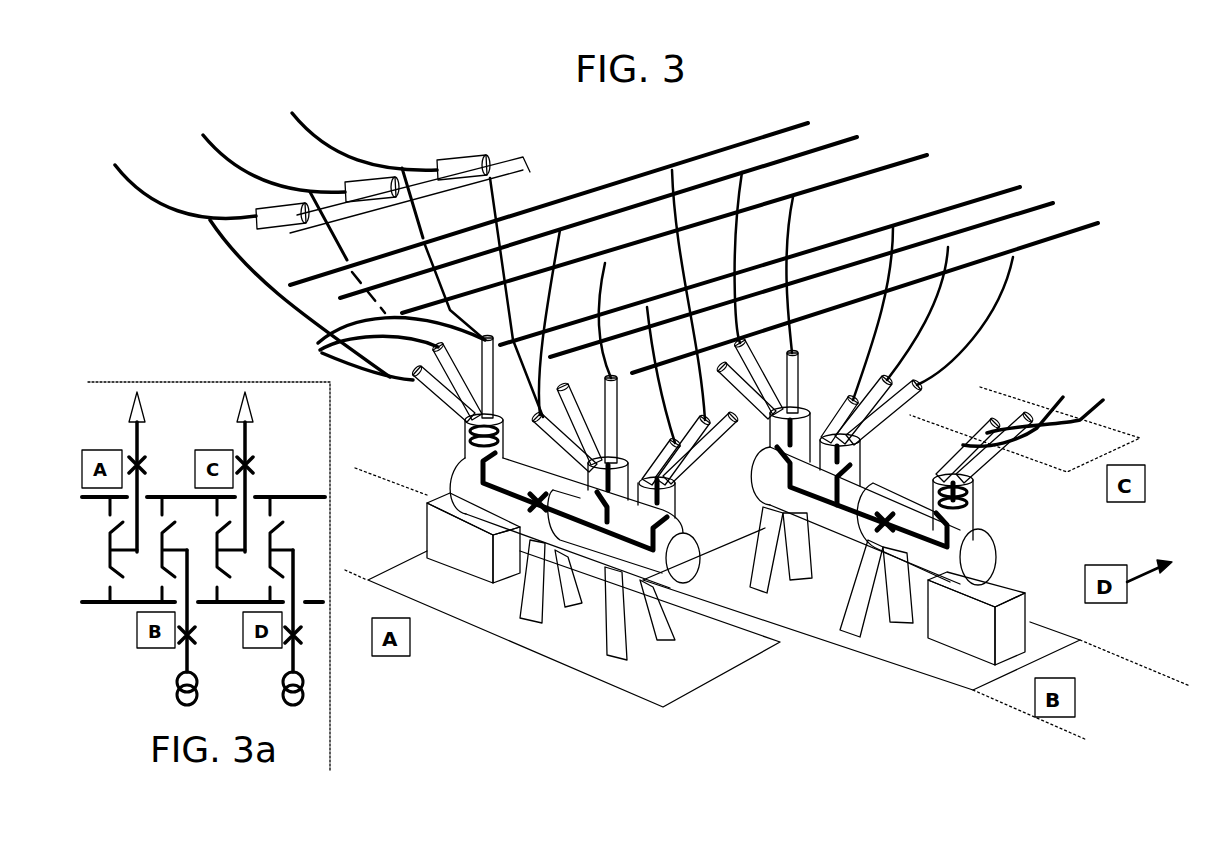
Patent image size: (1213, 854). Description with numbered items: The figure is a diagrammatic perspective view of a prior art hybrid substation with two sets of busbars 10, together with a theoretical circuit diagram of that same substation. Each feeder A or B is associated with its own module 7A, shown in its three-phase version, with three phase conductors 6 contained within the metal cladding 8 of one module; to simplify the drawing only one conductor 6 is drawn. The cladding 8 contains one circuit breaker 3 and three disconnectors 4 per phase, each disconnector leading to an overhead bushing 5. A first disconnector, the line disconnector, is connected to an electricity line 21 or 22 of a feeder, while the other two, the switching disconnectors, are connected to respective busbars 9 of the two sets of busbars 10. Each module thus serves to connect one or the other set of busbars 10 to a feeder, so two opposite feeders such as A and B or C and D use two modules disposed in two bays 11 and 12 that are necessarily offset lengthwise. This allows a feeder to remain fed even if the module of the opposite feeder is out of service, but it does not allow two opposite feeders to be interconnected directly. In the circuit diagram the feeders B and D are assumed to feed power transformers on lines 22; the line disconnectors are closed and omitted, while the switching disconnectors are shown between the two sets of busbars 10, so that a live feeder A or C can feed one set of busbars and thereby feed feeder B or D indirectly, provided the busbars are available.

In FIG. 3, the circuit breaker 3 is at (536, 506).
In FIG. 3A, the circuit breaker 3 is at (134, 455).
In FIG. 3, the disconnector 4 is at (824, 546).
In FIG. 3A, the disconnector 4 is at (100, 527).
In FIG. 3, the overhead bushing 5 is at (332, 353).
In FIG. 3, the phase conductor 6 is at (596, 500).
In FIG. 3, the module 7A is at (687, 582).
In FIG. 3, the metal cladding 8 is at (655, 506).
In FIG. 3, the busbar 9 is at (975, 185).
In FIG. 3, the set of busbars 10 is at (800, 112).
In FIG. 3A, the set of busbars 10 is at (286, 480).
In FIG. 3, the bay 11 is at (384, 500).
In FIG. 3, the bay 12 is at (1080, 672).
In FIG. 3, the electricity line 21 is at (115, 150).
In FIG. 3A, the electricity line 21 is at (137, 440).
In FIG. 3A, the line 22 is at (187, 658).